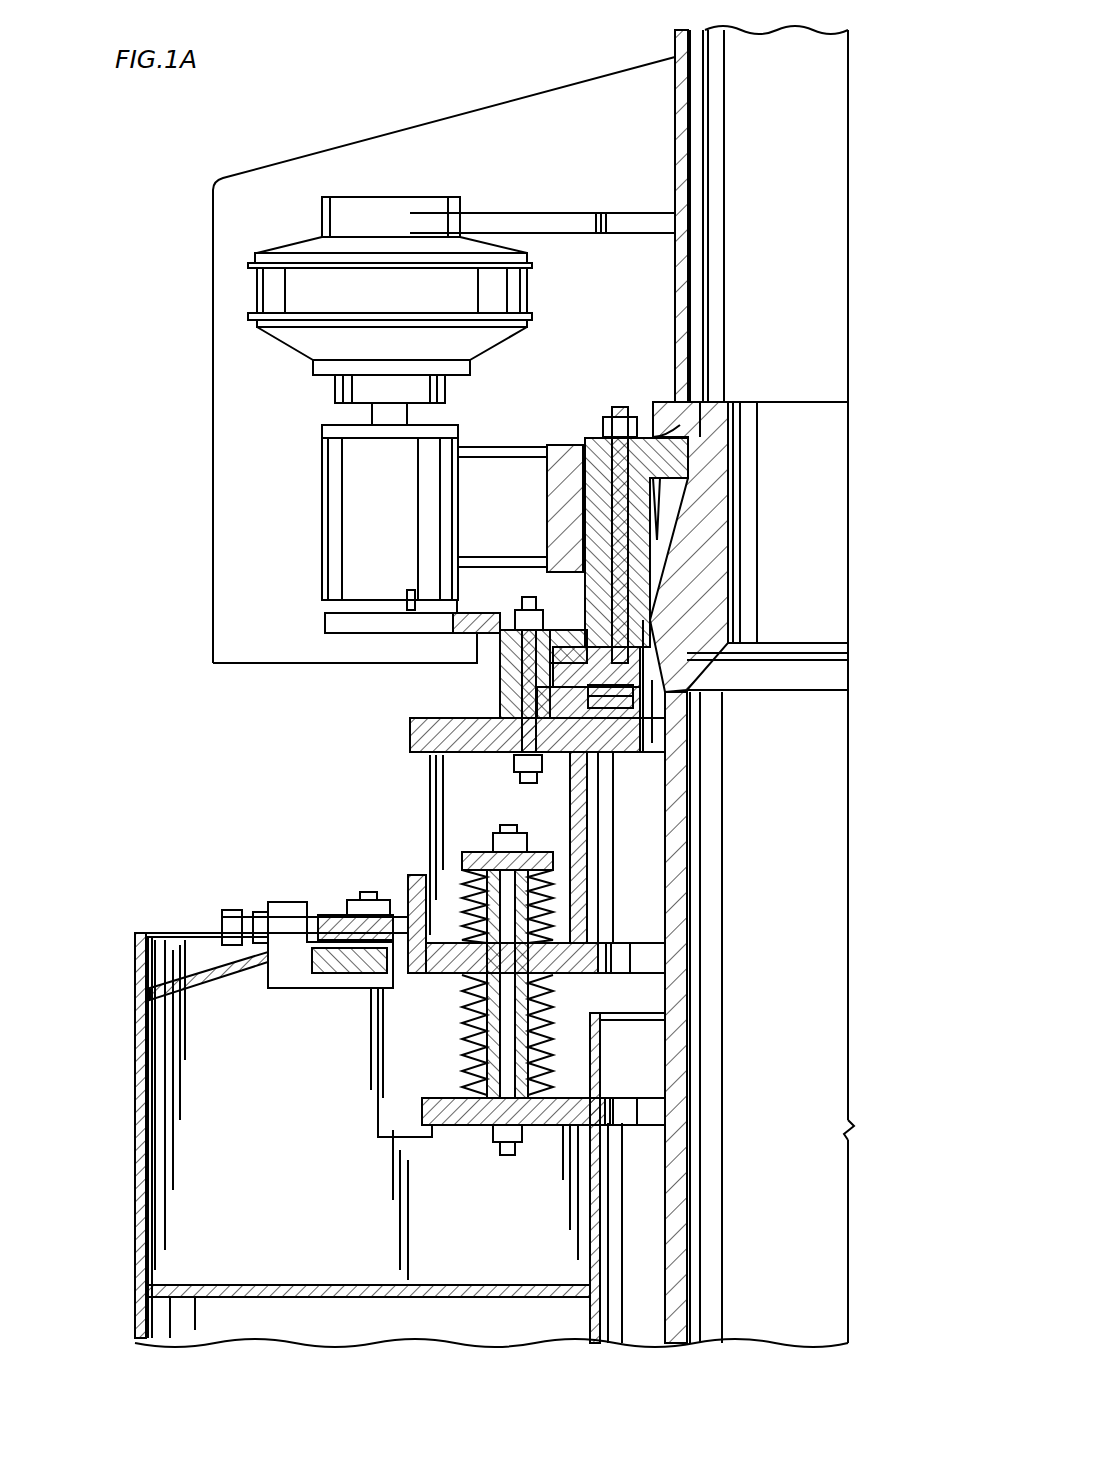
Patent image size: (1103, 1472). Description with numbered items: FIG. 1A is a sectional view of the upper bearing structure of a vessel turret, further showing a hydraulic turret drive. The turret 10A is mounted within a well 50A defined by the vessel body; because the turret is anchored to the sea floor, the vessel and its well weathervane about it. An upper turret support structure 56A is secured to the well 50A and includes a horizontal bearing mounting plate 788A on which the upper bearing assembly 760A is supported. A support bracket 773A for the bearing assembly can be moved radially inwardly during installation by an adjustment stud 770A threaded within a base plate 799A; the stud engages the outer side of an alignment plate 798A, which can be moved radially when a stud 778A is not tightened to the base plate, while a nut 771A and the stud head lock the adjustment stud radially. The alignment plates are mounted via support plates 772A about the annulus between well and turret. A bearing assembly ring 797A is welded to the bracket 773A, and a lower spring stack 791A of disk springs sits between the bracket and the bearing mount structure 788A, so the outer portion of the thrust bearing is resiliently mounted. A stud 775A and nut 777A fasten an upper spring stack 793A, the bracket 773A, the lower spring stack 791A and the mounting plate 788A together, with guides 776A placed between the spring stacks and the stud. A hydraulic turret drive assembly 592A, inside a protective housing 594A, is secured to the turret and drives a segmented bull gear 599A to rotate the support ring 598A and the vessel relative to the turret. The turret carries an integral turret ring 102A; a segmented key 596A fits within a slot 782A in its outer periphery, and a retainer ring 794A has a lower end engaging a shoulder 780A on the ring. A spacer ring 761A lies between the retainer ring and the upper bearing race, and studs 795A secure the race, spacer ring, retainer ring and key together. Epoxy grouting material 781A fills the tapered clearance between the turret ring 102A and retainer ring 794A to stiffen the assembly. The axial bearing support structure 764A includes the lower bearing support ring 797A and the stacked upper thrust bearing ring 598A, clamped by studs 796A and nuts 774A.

The turret 10A is at (690, 877).
The well 50A is at (148, 1050).
The upper turret support structure 56A is at (175, 1160).
The turret ring 102A is at (712, 545).
The hydraulic turret drive assembly 592A is at (258, 292).
The protective housing 594A is at (378, 136).
The segmented key 596A is at (707, 460).
The upper thrust bearing ring 598A is at (500, 650).
The segmented bull gear 599A is at (445, 627).
The upper bearing assembly 760A is at (650, 668).
The spacer ring 761A is at (640, 655).
The axial bearing support structure 764A is at (497, 690).
The adjustment stud 770A is at (242, 912).
The nut 771A is at (265, 910).
The support plate 772A is at (215, 980).
The support bracket 773A is at (415, 875).
The nut 774A is at (520, 765).
The stud 775A is at (508, 825).
The guide 776A is at (553, 897).
The nut 777A is at (505, 1143).
The stud 778A is at (368, 892).
The shoulder 780A is at (650, 607).
The epoxy grouting material 781A is at (655, 493).
The slot 782A is at (688, 437).
The bearing mounting plate 788A is at (608, 1110).
The lower spring stack 791A is at (553, 1003).
The upper spring stack 793A is at (553, 935).
The retainer ring 794A is at (660, 520).
The stud 795A is at (618, 407).
The stud 796A is at (527, 597).
The bearing assembly ring 797A is at (628, 760).
The alignment plate 798A is at (333, 915).
The base plate 799A is at (305, 988).